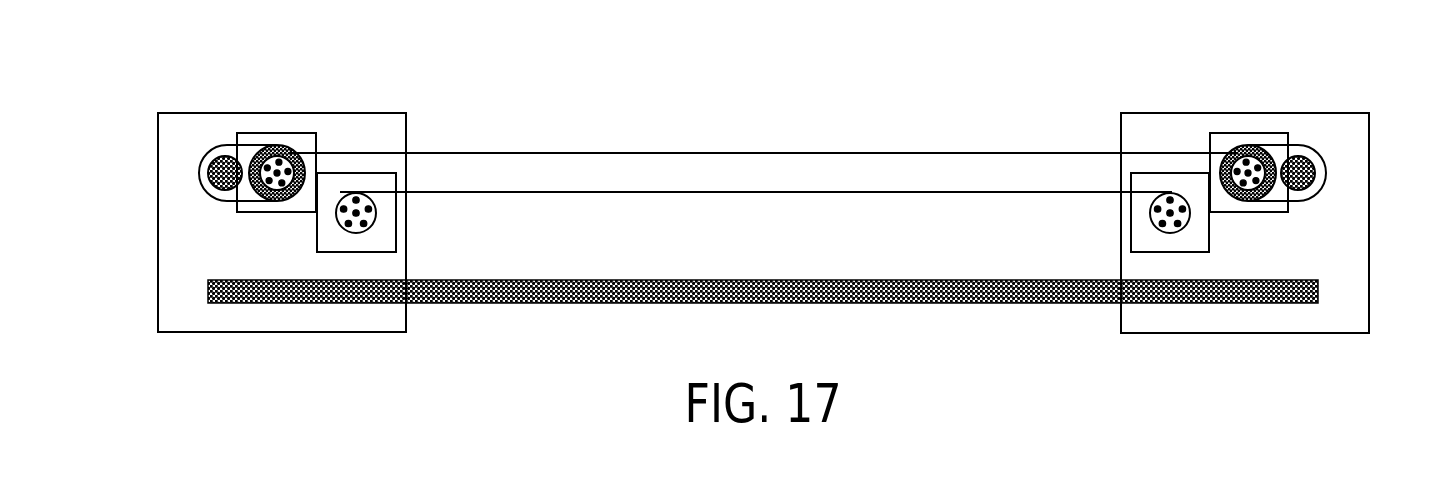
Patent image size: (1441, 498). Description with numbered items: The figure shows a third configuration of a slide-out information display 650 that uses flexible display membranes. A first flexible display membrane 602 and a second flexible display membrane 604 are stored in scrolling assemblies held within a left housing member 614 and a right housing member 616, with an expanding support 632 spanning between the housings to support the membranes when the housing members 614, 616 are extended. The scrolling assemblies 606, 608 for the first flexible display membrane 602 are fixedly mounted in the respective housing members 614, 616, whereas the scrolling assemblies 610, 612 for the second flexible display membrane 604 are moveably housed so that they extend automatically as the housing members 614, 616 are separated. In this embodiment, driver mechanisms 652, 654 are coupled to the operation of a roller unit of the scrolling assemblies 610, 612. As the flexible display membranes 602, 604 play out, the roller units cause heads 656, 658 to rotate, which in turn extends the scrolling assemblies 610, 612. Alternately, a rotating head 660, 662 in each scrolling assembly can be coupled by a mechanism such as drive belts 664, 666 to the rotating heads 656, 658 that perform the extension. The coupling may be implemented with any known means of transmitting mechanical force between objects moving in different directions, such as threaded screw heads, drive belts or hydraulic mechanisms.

The first flexible display membrane 602 is at (616, 191).
The second flexible display membrane 604 is at (827, 152).
The left scrolling assembly 606 is at (383, 233).
The right scrolling assembly 608 is at (1138, 238).
The left scrolling assembly 610 is at (395, 122).
The right scrolling assembly 612 is at (1132, 122).
The housing member 614 is at (383, 315).
The housing member 616 is at (1138, 318).
The expanding support 632 is at (777, 279).
The slide-out display 650 is at (778, 113).
The driver mechanism 652 is at (203, 216).
The driver mechanism 654 is at (1323, 216).
The head 656 is at (223, 172).
The head 658 is at (1313, 173).
The rotating head 660 is at (257, 147).
The rotating head 662 is at (1270, 150).
The drive belt 664 is at (210, 149).
The drive belt 666 is at (1308, 140).